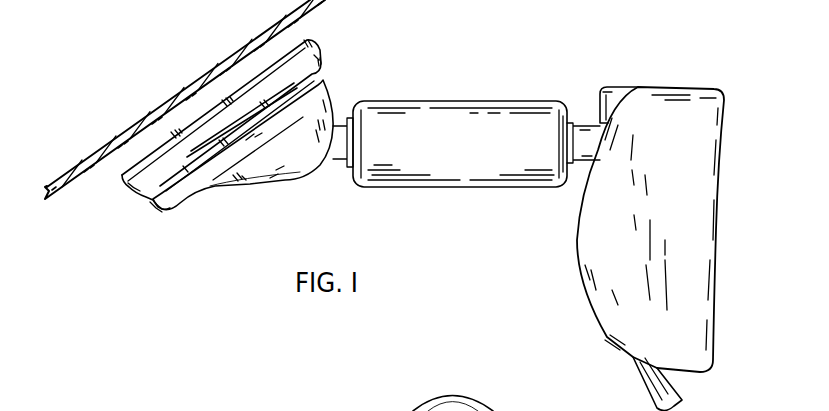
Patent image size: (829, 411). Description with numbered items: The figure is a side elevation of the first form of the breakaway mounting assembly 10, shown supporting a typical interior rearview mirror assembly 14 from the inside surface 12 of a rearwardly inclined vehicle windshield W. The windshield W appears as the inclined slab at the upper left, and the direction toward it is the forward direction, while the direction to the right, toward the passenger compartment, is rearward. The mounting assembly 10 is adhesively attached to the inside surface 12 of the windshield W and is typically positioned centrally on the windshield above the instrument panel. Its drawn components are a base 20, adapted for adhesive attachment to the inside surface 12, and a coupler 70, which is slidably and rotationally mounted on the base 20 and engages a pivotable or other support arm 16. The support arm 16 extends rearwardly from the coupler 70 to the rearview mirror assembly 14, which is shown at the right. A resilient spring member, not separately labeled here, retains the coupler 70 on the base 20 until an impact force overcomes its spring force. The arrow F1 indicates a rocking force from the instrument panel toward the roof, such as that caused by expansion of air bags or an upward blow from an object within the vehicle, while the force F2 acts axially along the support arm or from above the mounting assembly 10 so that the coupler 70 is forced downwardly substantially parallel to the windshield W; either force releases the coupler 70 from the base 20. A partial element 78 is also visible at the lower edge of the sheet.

The breakaway mounting assembly 10 is at (365, 76).
The inside surface 12 is at (312, 23).
The rearview mirror assembly 14 is at (682, 87).
The support arm 16 is at (429, 100).
The base 20 is at (127, 189).
The coupler 70 is at (233, 187).
The wheel 78 is at (482, 402).
The windshield W is at (240, 50).
The force arrow F1 is at (325, 163).
The force F2 is at (726, 158).